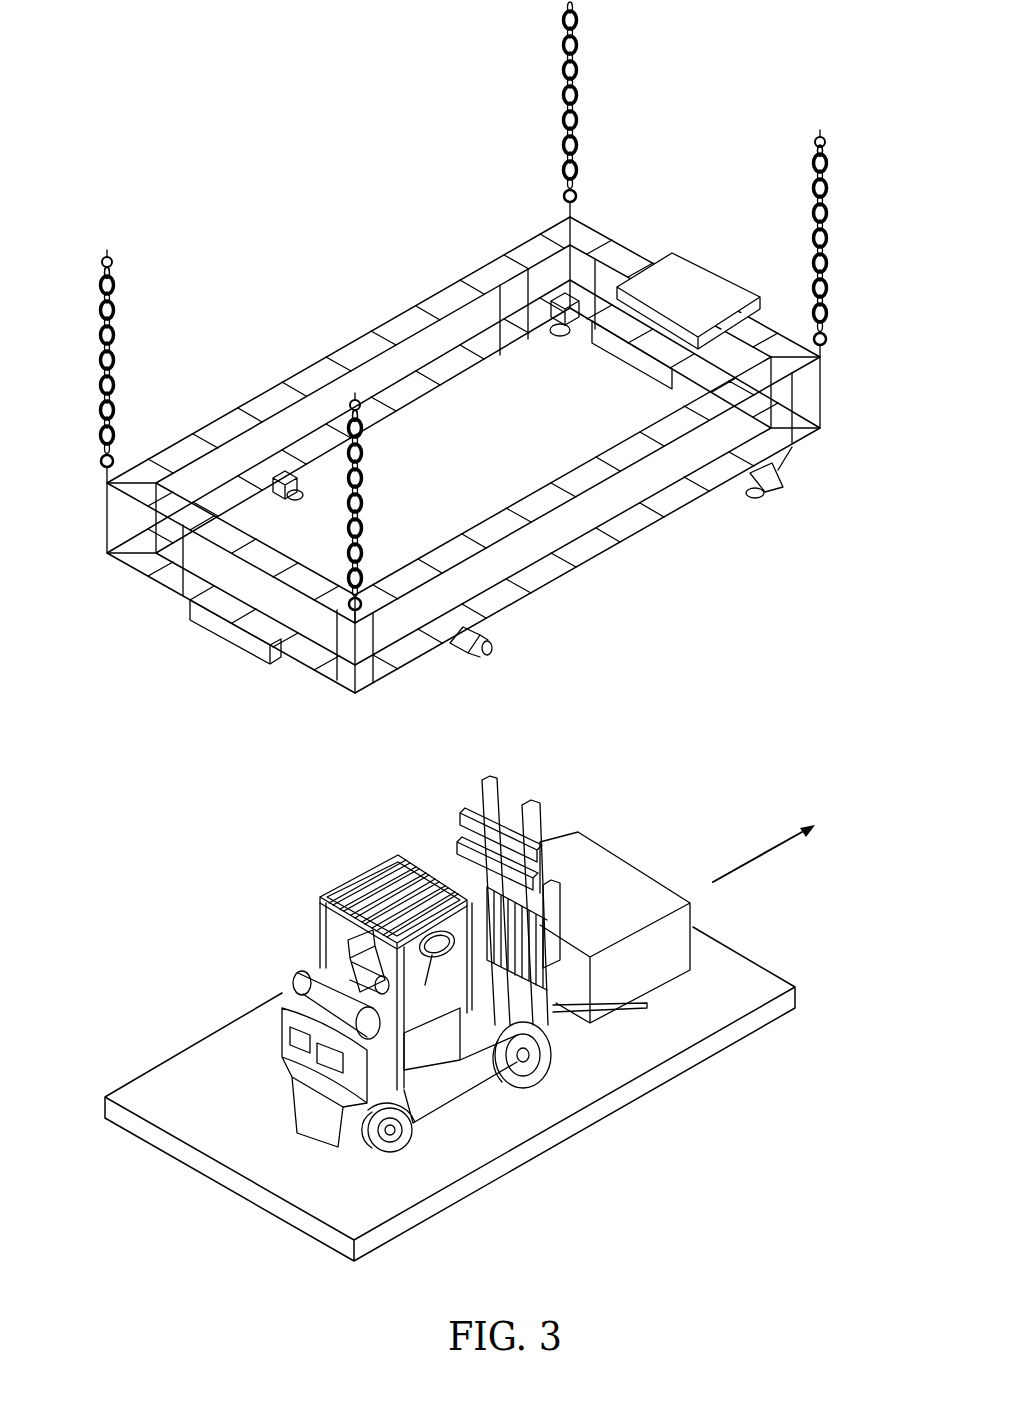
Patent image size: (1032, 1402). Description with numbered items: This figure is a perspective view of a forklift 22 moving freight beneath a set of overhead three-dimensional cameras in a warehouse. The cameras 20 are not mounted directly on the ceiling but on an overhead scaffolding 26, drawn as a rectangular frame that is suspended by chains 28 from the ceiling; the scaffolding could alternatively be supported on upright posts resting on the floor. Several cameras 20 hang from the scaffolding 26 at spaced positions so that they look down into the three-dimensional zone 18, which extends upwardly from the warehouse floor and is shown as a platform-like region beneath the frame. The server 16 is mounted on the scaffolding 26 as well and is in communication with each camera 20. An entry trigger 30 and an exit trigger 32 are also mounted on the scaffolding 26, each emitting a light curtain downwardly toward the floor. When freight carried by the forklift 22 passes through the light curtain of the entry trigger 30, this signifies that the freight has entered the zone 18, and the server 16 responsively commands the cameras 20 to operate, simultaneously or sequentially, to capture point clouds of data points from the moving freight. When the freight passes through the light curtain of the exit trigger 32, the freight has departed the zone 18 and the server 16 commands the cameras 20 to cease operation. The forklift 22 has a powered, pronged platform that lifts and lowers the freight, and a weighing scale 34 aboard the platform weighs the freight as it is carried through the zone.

The server 16 is at (683, 267).
The 3D zone 18 is at (610, 1142).
The 3D camera 20 is at (796, 494).
The forklift 22 is at (637, 867).
The overhead scaffolding 26 is at (107, 520).
The chain 28 is at (565, 48).
The entry trigger 30 is at (235, 638).
The exit trigger 32 is at (632, 359).
The weighing scale 34 is at (543, 885).